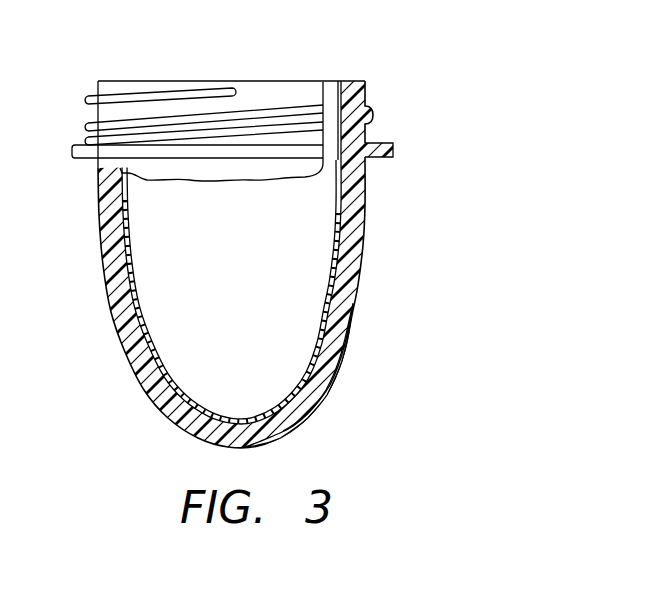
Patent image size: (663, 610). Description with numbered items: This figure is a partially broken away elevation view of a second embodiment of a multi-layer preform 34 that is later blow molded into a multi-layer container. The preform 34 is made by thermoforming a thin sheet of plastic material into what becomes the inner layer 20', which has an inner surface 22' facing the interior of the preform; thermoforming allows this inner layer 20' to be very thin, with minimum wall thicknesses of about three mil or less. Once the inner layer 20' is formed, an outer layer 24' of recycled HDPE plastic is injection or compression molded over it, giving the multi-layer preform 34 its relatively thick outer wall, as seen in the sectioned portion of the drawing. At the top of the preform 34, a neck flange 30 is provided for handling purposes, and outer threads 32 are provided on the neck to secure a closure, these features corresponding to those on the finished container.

The outer threads 32 is at (186, 95).
The neck flange 30 is at (378, 157).
The inner layer 20' is at (331, 265).
The inner surface 22' is at (232, 291).
The outer layer 24' is at (324, 375).
The multi-layer preform 34 is at (412, 334).